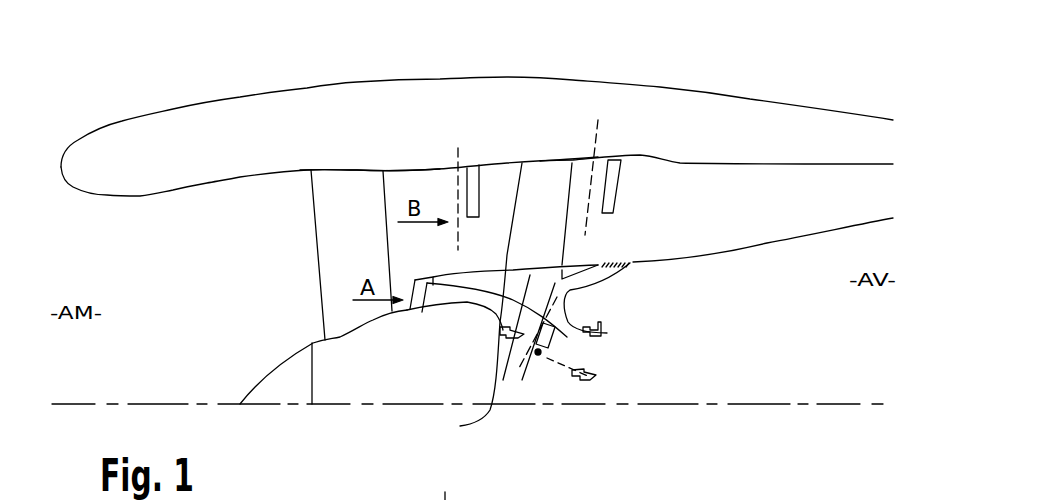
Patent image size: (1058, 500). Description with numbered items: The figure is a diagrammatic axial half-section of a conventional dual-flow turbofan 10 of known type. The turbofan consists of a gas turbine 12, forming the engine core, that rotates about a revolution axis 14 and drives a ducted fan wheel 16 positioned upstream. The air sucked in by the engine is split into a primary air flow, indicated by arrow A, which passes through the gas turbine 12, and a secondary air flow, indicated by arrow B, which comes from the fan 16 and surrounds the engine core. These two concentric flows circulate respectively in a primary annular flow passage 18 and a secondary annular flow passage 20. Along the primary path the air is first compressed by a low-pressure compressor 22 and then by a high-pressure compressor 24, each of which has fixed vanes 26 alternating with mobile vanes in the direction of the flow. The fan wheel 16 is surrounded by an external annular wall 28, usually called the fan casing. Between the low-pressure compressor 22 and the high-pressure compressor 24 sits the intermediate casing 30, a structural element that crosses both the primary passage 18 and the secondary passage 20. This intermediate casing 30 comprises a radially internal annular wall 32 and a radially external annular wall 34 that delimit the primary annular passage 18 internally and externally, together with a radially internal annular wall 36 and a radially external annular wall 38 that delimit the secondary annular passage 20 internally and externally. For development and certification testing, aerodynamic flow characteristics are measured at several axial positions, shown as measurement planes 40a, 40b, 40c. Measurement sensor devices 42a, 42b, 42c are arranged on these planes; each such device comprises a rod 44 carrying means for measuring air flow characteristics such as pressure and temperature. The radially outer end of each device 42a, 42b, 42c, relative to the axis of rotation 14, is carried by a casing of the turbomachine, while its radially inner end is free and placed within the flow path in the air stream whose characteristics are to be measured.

The dual-flow turbofan 10 is at (196, 79).
The gas turbine 12 is at (850, 326).
The revolution axis 14 is at (773, 404).
The ducted fan wheel 16 is at (284, 260).
The primary annular flow passage 18 is at (552, 327).
The secondary annular flow passage 20 is at (771, 199).
The low-pressure compressor 22 is at (453, 297).
The high-pressure compressor 24 is at (597, 363).
The fixed vanes 26 is at (412, 313).
The external annular wall 28 is at (420, 170).
The intermediate casing 30 is at (509, 191).
The radially internal annular wall 32 is at (500, 318).
The radially external annular wall 34 is at (477, 298).
The radially internal annular wall 36 is at (545, 265).
The radially external annular wall 38 is at (555, 165).
The measurement plane 40a is at (458, 150).
The measurement plane 40b is at (598, 138).
The measurement plane 40c is at (518, 372).
The measurement sensor device 42a is at (472, 170).
The measurement sensor device 42b is at (630, 185).
The measurement sensor device 42c is at (535, 352).
The rod 44 is at (613, 205).